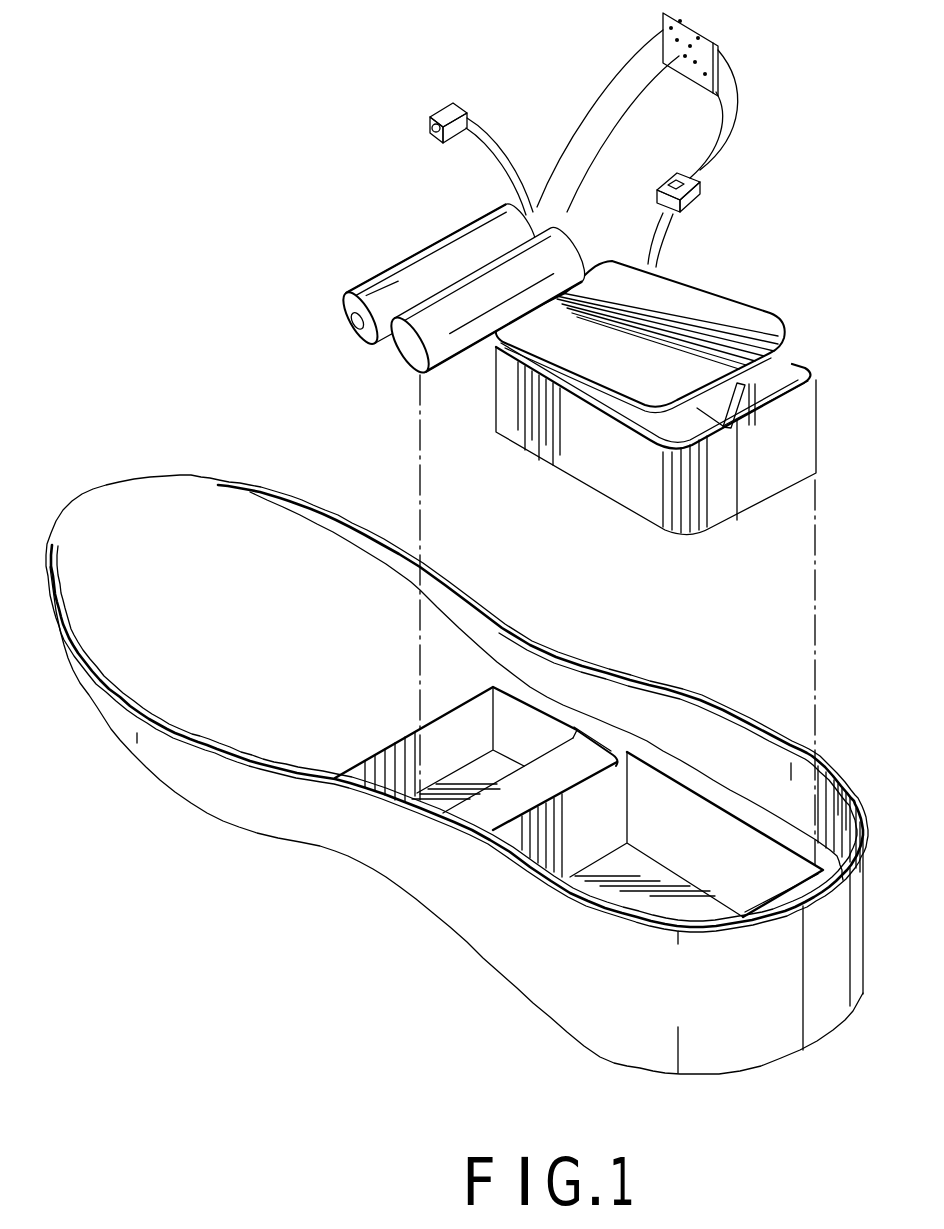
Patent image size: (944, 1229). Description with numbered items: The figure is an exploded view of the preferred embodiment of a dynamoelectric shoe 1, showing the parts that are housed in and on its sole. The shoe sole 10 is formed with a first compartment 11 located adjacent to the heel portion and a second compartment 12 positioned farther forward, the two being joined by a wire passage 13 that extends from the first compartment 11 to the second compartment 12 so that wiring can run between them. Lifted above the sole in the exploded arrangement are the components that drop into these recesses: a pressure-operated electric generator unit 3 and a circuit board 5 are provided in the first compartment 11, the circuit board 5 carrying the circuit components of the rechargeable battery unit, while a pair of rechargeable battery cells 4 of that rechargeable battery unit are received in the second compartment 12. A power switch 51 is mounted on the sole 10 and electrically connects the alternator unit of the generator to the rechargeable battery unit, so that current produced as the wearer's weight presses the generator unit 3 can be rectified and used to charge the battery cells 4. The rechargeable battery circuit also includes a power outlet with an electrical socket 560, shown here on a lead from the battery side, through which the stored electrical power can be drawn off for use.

The dynamoelectric shoe 1 is at (703, 701).
The shoe sole 10 is at (743, 740).
The first compartment 11 is at (760, 867).
The second compartment 12 is at (513, 720).
The wire passage 13 is at (594, 746).
The pressure-operated electric generator unit 3 is at (803, 370).
The rechargeable battery cells 4 is at (386, 266).
The circuit board 5 is at (704, 28).
The power switch 51 is at (700, 190).
The electrical socket 560 is at (432, 117).